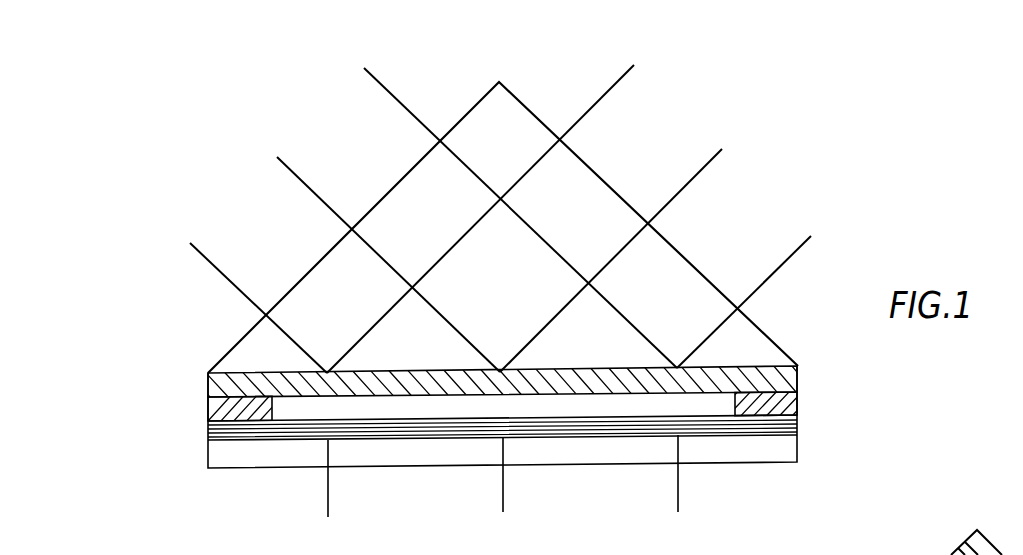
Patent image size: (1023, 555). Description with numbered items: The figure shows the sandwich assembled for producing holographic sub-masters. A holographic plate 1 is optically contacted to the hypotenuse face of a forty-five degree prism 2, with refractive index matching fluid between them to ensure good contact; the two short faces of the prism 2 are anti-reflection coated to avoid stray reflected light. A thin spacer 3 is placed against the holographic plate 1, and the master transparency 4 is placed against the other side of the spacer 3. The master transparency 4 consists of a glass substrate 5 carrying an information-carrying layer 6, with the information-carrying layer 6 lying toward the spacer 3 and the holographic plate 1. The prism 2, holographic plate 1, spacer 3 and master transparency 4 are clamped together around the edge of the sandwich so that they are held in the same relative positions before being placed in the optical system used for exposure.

The transparent cover plate 1 is at (810, 382).
The prism 2 is at (505, 97).
The spacer 3 is at (812, 403).
The electrode layer 4 is at (803, 417).
The substrate 5 is at (781, 455).
The thin film layers 6 is at (818, 417).